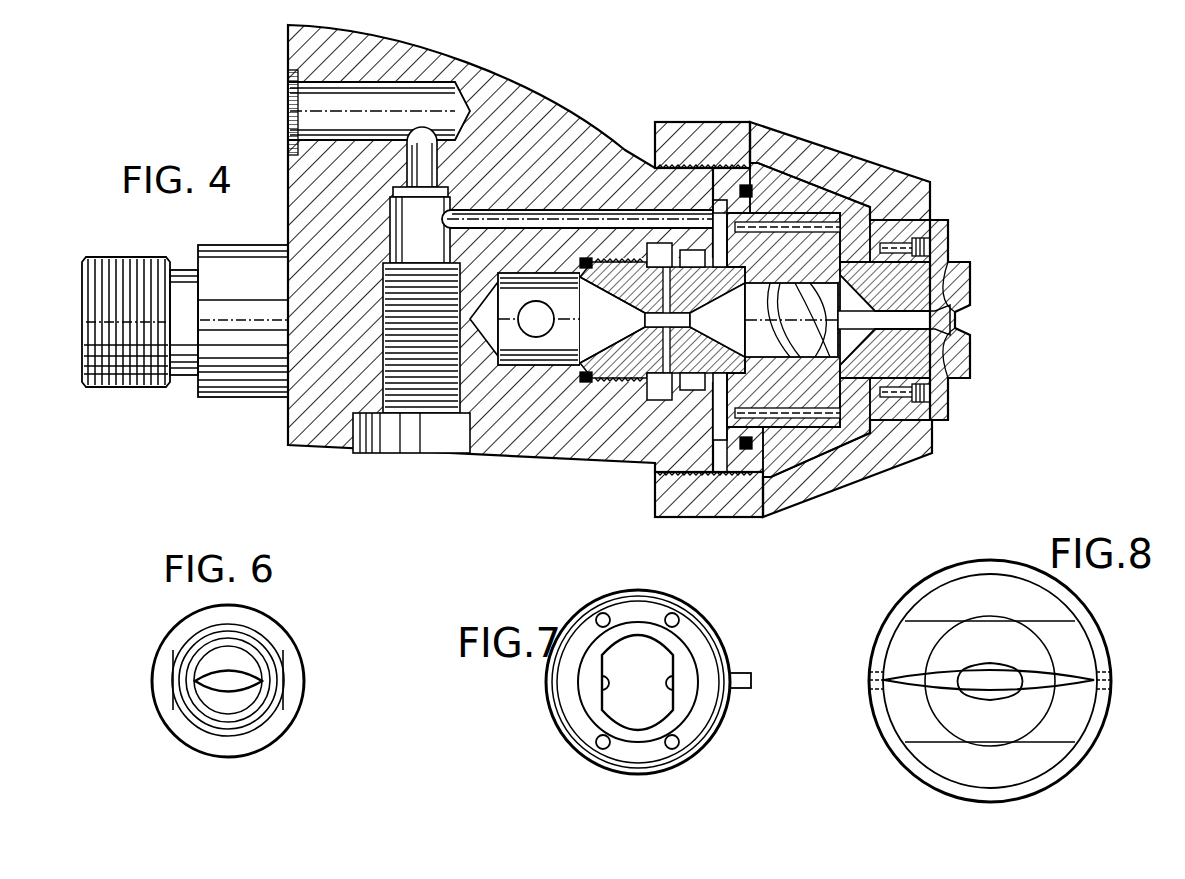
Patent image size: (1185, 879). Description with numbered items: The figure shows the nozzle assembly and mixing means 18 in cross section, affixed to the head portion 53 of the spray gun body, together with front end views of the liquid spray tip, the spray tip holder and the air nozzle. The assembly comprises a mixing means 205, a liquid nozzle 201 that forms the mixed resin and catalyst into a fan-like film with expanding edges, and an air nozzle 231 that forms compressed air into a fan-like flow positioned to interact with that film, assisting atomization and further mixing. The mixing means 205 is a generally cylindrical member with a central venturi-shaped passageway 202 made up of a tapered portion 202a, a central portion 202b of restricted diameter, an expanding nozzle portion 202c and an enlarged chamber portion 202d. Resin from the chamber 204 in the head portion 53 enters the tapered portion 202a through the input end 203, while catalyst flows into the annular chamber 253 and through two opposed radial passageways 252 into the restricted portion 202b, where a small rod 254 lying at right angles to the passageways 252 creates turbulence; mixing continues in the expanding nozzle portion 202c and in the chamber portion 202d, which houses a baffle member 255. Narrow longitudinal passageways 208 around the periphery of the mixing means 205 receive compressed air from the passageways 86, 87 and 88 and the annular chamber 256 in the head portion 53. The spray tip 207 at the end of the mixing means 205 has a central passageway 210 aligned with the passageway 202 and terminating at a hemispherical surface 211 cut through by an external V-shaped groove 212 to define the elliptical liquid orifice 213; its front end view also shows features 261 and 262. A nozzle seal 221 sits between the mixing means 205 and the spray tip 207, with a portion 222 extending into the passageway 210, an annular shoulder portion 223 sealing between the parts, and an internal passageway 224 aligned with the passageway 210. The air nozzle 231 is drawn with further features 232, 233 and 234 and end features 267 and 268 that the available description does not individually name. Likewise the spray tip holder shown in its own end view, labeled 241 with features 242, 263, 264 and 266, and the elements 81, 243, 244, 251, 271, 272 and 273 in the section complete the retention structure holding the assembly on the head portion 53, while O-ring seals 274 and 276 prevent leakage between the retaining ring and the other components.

In FIG. 4, the nozzle assembly and mixing means 18 is at (983, 141).
In FIG. 4, the head portion 53 is at (558, 102).
In FIG. 4, the piston 81 is at (530, 305).
In FIG. 4, the passageway 86 is at (313, 112).
In FIG. 4, the passageway 87 is at (436, 157).
In FIG. 4, the passageway 88 is at (612, 208).
In FIG. 4, the liquid nozzle 201 is at (803, 445).
In FIG. 4, the central passageway 202 is at (663, 373).
In FIG. 4, the tapered portion 202a is at (612, 320).
In FIG. 4, the central portion of restricted diameter 202b is at (697, 320).
In FIG. 4, the expanding nozzle portion 202c is at (697, 320).
In FIG. 4, the enlarged chamber portion 202d is at (785, 282).
In FIG. 4, the input end 203 is at (560, 350).
In FIG. 4, the chamber 204 is at (520, 358).
In FIG. 4, the mixing means 205 is at (628, 396).
In FIG. 4, the spray tip 207 is at (968, 275).
In FIG. 6, the spray tip 207 is at (305, 643).
In FIG. 4, the longitudinal passageways 208 is at (812, 208).
In FIG. 4, the central passageway 210 is at (962, 312).
In FIG. 4, the hemispherical surface 211 is at (953, 340).
In FIG. 4, the V-shaped groove 212 is at (967, 325).
In FIG. 4, the liquid orifice 213 is at (962, 326).
In FIG. 6, the liquid orifice 213 is at (237, 683).
In FIG. 4, the nozzle seal 221 is at (868, 252).
In FIG. 4, the portion 222 is at (850, 380).
In FIG. 4, the annular shoulder portion 223 is at (886, 245).
In FIG. 4, the internal passageway 224 is at (967, 260).
In FIG. 4, the air nozzle 231 is at (966, 254).
In FIG. 8, the air nozzle 231 is at (1101, 626).
In FIG. 4, the cap wall 232 is at (940, 380).
In FIG. 4, the cap recess 233 is at (943, 352).
In FIG. 4, the slot 234 is at (960, 335).
In FIG. 8, the slot 234 is at (986, 683).
In FIG. 4, the retainer ring 241 is at (933, 422).
In FIG. 7, the retainer ring 241 is at (737, 644).
In FIG. 4, the holes 242 is at (905, 225).
In FIG. 7, the holes 242 is at (603, 614).
In FIG. 4, the ring nut 243 is at (852, 262).
In FIG. 4, the chamber 244 is at (965, 292).
In FIG. 4, the collar 251 is at (937, 457).
In FIG. 4, the radial passageways 252 is at (665, 277).
In FIG. 4, the annular chamber 253 is at (657, 392).
In FIG. 4, the small rod 254 is at (603, 343).
In FIG. 4, the baffle member 255 is at (775, 338).
In FIG. 4, the annular chamber 256 is at (719, 440).
In FIG. 6, the flat 261 is at (172, 677).
In FIG. 6, the flat 262 is at (284, 673).
In FIG. 7, the notch 263 is at (603, 693).
In FIG. 7, the notch 264 is at (672, 693).
In FIG. 7, the tab 266 is at (750, 672).
In FIG. 8, the slot end 267 is at (1110, 678).
In FIG. 8, the slot end 268 is at (870, 678).
In FIG. 4, the thread 271 is at (708, 150).
In FIG. 4, the nut 272 is at (673, 122).
In FIG. 4, the nut 273 is at (660, 465).
In FIG. 4, the O-ring seal 274 is at (746, 184).
In FIG. 4, the O-ring seal 276 is at (912, 213).